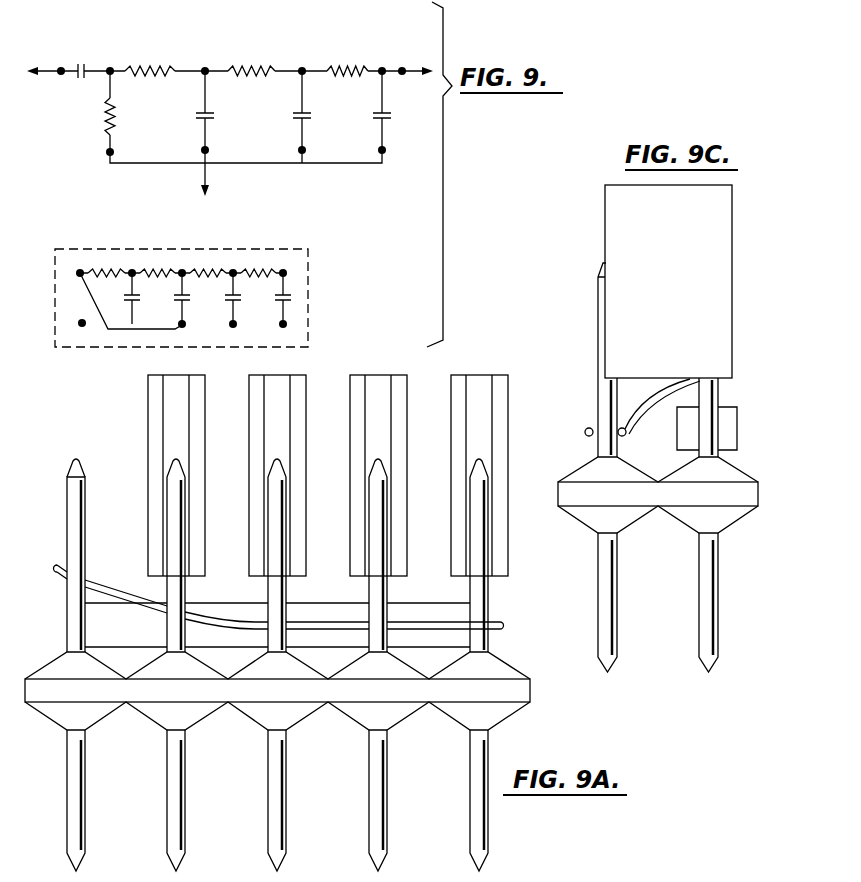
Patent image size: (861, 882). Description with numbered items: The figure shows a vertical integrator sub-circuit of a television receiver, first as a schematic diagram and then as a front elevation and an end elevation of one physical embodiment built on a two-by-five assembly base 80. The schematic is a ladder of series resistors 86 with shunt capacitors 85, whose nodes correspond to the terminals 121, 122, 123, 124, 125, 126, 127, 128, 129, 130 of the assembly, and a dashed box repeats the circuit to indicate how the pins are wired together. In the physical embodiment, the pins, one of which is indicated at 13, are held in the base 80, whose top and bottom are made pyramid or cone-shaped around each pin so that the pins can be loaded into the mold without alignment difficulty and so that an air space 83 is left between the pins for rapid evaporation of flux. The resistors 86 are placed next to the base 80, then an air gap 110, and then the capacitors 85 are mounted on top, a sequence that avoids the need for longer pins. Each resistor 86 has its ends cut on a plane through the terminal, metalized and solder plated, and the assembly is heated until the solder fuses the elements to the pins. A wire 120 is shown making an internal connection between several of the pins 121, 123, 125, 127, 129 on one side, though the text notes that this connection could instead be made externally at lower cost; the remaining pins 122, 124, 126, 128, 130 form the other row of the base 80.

In FIG. 9A, the pin tip 13 is at (72, 462).
In FIG. 9A, the assembly base 80 is at (498, 690).
In FIG. 9C, the assembly base 80 is at (725, 492).
In FIG. 9A, the air space 83 is at (440, 704).
In FIG. 9, the capacitor element 85 is at (207, 120).
In FIG. 9A, the capacitor element 85 is at (265, 418).
In FIG. 9C, the capacitor element 85 is at (717, 265).
In FIG. 9, the resistor 86 is at (148, 86).
In FIG. 9A, the resistor 86 is at (158, 644).
In FIG. 9C, the resistor 86 is at (735, 432).
In FIG. 9A, the air gap 110 is at (165, 587).
In FIG. 9, the wire 120 is at (88, 300).
In FIG. 9A, the wire 120 is at (153, 602).
In FIG. 9C, the wire 120 is at (640, 412).
In FIG. 9, the pin 121 is at (83, 328).
In FIG. 9A, the pin 121 is at (75, 523).
In FIG. 9, the node 122 is at (107, 160).
In FIG. 9, the pin 123 is at (75, 67).
In FIG. 9A, the pin 123 is at (178, 591).
In FIG. 9, the node 124 is at (112, 68).
In FIG. 9, the pin 125 is at (203, 152).
In FIG. 9A, the pin 125 is at (279, 591).
In FIG. 9, the node 126 is at (199, 63).
In FIG. 9, the pin 127 is at (300, 151).
In FIG. 9A, the pin 127 is at (380, 591).
In FIG. 9, the node 128 is at (303, 66).
In FIG. 9, the pin 129 is at (402, 161).
In FIG. 9A, the pin 129 is at (481, 591).
In FIG. 9C, the pin 129 is at (608, 604).
In FIG. 9, the pin 130 is at (384, 66).
In FIG. 9C, the pin 130 is at (718, 603).